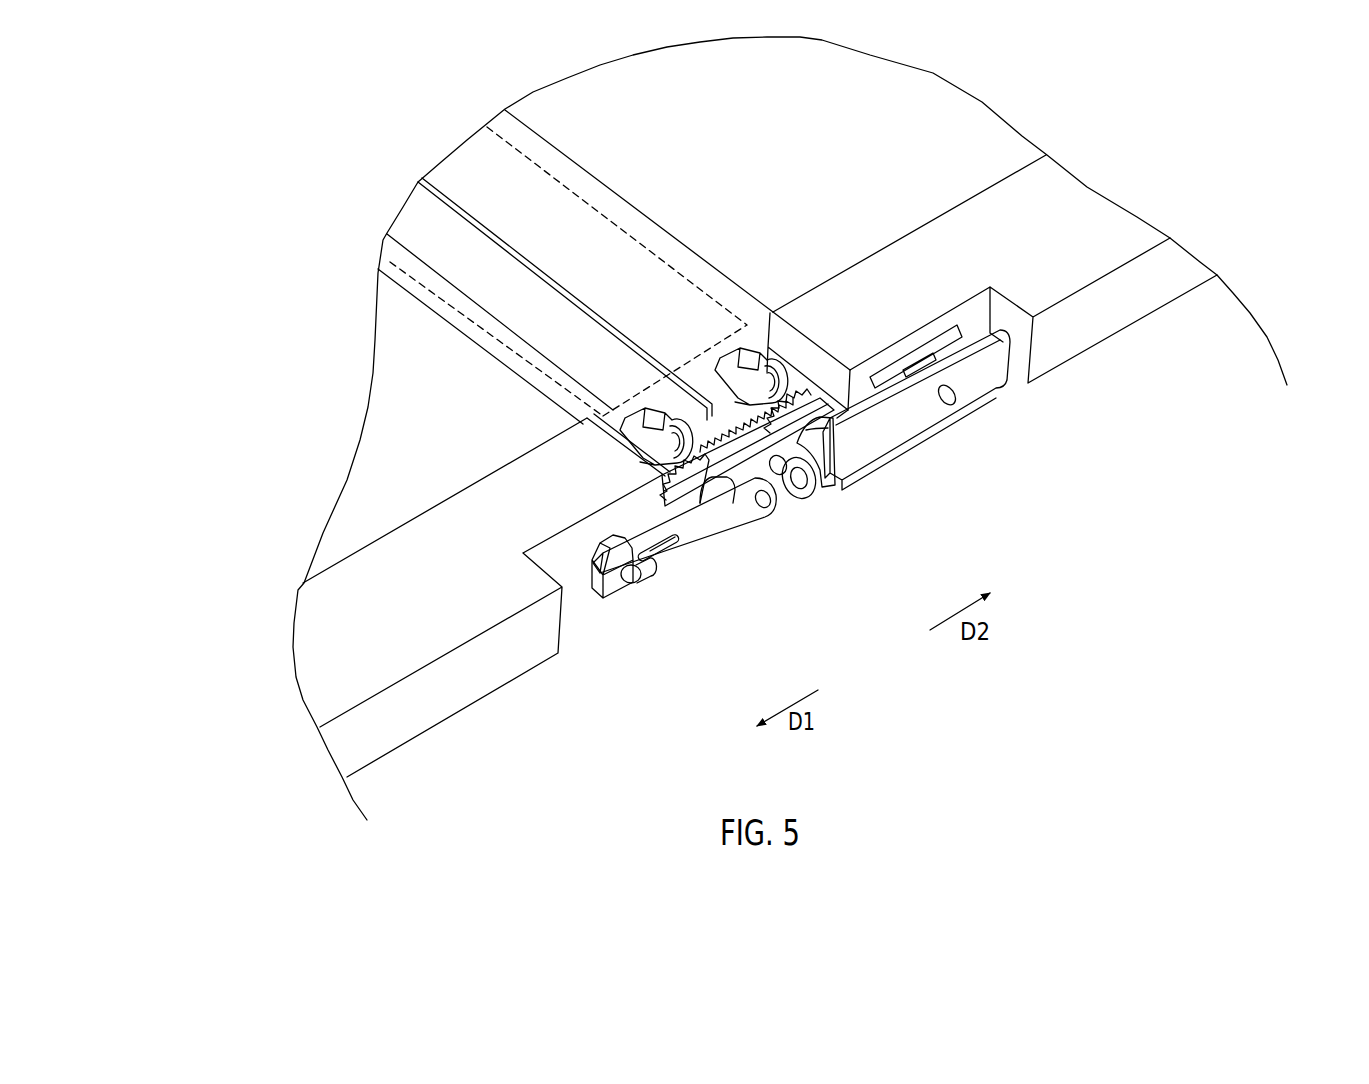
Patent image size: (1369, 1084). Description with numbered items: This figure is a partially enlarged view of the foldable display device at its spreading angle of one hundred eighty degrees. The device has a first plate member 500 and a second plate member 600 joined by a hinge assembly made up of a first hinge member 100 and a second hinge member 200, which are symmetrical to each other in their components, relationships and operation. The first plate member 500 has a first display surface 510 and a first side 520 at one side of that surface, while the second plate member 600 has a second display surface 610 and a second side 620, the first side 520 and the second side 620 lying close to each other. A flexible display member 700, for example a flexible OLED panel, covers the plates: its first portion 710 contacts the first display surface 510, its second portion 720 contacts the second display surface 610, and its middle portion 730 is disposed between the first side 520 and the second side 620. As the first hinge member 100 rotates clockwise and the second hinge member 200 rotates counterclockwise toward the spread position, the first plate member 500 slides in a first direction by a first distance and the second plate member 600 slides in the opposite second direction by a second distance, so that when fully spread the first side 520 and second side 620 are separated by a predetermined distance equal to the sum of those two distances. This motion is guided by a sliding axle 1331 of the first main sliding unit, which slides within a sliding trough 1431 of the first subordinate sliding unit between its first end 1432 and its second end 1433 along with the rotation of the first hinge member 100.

The first hinge member 100 is at (758, 531).
The second hinge member 200 is at (920, 458).
The first plate member 500 is at (455, 690).
The first display surface 510 is at (447, 460).
The first side 520 is at (612, 410).
The second plate member 600 is at (1065, 330).
The second display surface 610 is at (955, 192).
The second side 620 is at (770, 400).
The flexible display member 700 is at (978, 157).
The first portion 710 is at (435, 392).
The second portion 720 is at (902, 100).
The middle portion 730 is at (473, 180).
The sliding axle 1331 is at (634, 580).
The sliding trough 1431 is at (662, 551).
The first end 1432 is at (682, 543).
The second end 1433 is at (610, 575).